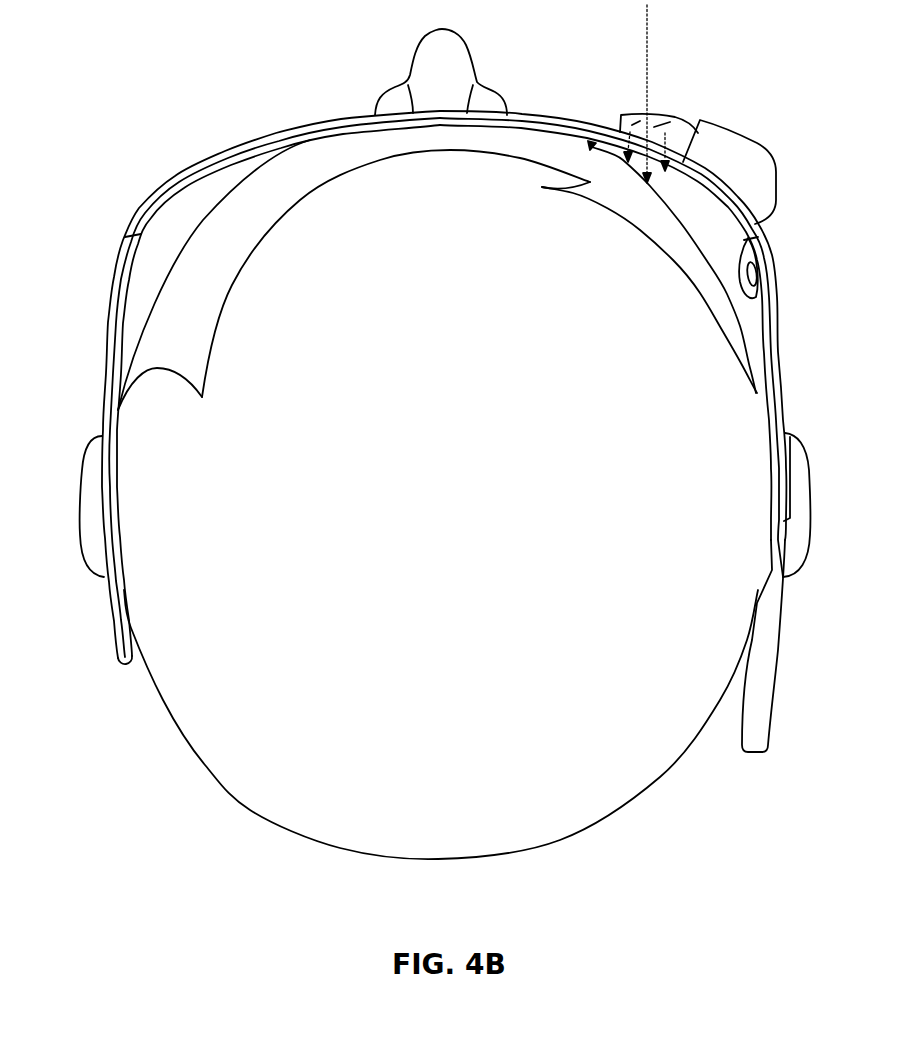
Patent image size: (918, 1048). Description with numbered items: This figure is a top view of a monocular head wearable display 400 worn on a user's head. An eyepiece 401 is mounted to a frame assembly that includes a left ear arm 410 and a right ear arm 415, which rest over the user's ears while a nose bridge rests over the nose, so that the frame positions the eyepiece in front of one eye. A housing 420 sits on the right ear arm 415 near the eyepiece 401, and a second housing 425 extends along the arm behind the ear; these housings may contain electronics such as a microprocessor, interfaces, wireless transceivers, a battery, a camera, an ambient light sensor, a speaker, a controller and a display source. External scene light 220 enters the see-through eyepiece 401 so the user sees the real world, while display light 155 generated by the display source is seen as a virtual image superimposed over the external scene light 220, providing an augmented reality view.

The head wearable display 400 is at (187, 92).
The left ear arm 410 is at (112, 323).
The right ear arm 415 is at (777, 378).
The housing 425 is at (770, 667).
The housing 420 is at (753, 178).
The eyepiece 401 is at (672, 118).
The external scene light 220 is at (650, 48).
The display light 155 is at (619, 129).